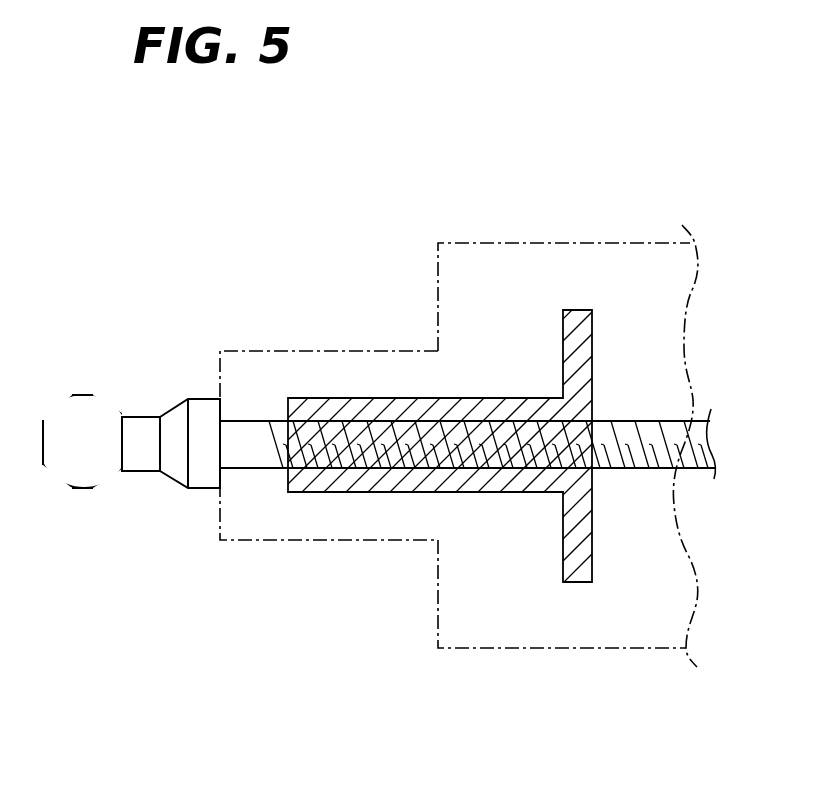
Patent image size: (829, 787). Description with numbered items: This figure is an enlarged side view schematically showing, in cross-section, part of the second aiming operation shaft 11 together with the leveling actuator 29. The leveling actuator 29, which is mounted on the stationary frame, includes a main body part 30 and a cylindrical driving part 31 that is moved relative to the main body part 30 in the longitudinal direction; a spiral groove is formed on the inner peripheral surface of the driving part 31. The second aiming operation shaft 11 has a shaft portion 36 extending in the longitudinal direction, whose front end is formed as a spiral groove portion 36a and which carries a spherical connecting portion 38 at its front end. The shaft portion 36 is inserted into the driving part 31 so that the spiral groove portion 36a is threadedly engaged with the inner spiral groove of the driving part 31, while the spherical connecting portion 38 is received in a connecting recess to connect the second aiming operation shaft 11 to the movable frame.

The second aiming operation shaft 11 is at (637, 421).
The leveling actuator 29 is at (492, 243).
The main body part 30 is at (580, 243).
The driving part 31 is at (400, 398).
The shaft portion 36 is at (635, 470).
The spiral groove portion 36a is at (659, 468).
The spherical connecting portion 38 is at (95, 412).